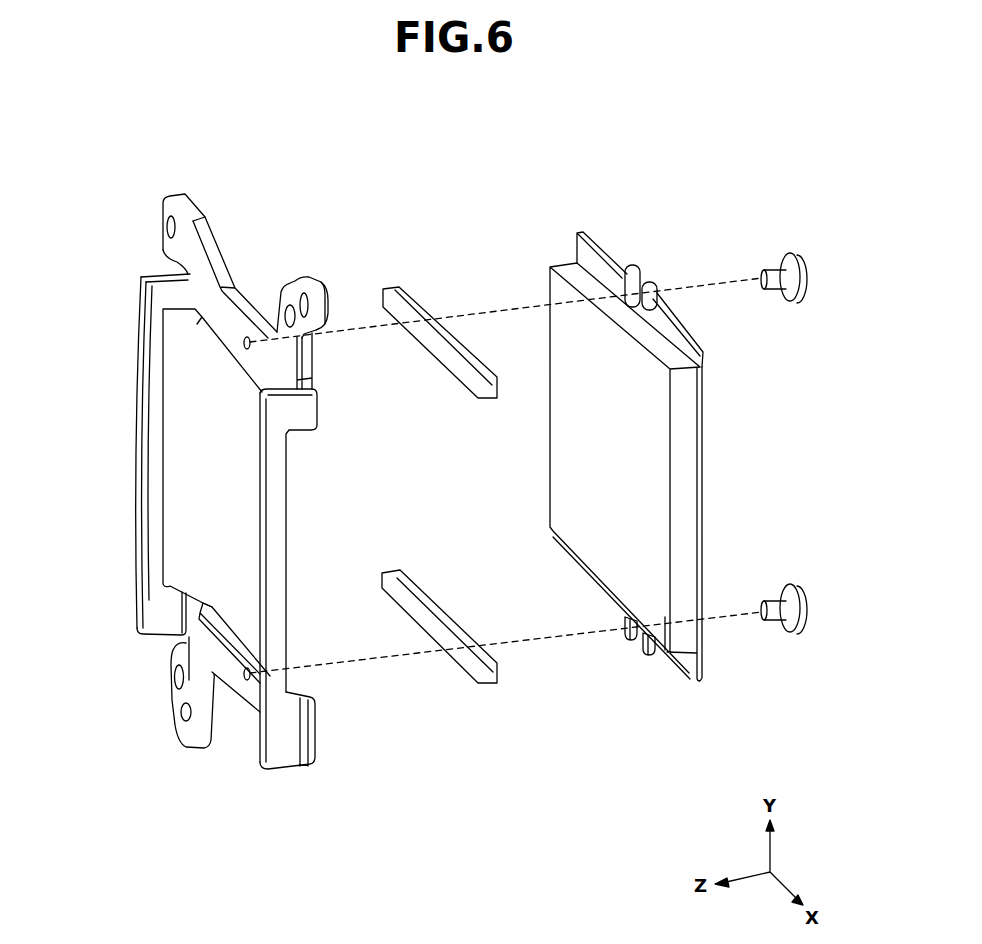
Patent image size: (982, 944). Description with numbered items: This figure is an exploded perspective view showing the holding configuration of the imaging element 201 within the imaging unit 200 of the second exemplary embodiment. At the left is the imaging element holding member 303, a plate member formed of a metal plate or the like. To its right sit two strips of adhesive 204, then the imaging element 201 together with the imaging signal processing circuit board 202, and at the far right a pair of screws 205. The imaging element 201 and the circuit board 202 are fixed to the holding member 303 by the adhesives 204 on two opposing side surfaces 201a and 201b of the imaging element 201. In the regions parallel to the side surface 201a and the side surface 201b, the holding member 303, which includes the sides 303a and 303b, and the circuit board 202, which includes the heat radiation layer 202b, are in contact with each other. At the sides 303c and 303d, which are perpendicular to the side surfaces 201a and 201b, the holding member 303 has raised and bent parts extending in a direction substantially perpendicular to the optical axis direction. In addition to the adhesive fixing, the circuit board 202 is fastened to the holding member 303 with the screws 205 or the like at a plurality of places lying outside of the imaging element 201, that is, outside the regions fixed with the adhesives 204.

The imaging unit 200 is at (848, 172).
The imaging element 201 is at (610, 500).
The side surface 201a is at (592, 295).
The side surface 201b is at (568, 553).
The imaging signal processing circuit board 202 is at (652, 657).
The heat radiation layer 202b is at (688, 665).
The adhesive 204 is at (460, 657).
The screw 205 is at (773, 288).
The imaging element holding member 303 is at (178, 708).
The side of holding member 303a is at (232, 323).
The side of holding member 303b is at (238, 676).
The side of holding member 303c is at (157, 447).
The side of holding member 303d is at (277, 652).